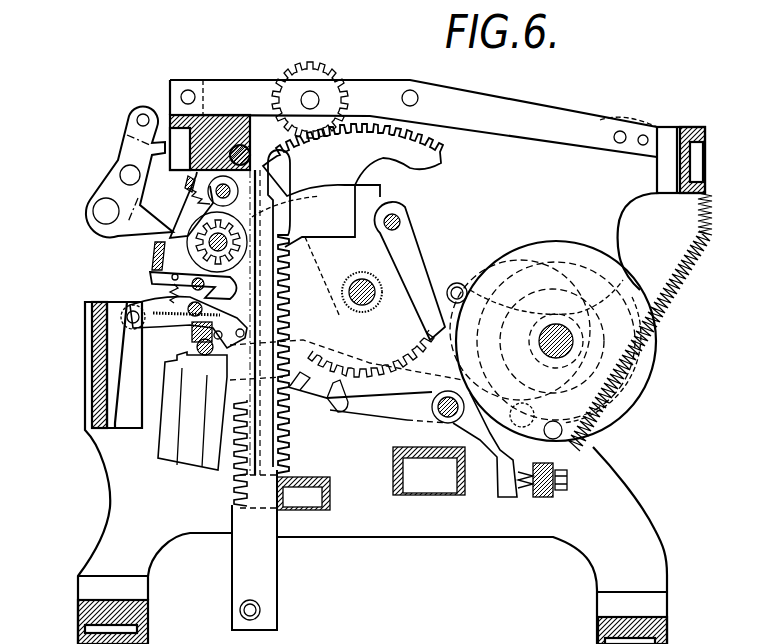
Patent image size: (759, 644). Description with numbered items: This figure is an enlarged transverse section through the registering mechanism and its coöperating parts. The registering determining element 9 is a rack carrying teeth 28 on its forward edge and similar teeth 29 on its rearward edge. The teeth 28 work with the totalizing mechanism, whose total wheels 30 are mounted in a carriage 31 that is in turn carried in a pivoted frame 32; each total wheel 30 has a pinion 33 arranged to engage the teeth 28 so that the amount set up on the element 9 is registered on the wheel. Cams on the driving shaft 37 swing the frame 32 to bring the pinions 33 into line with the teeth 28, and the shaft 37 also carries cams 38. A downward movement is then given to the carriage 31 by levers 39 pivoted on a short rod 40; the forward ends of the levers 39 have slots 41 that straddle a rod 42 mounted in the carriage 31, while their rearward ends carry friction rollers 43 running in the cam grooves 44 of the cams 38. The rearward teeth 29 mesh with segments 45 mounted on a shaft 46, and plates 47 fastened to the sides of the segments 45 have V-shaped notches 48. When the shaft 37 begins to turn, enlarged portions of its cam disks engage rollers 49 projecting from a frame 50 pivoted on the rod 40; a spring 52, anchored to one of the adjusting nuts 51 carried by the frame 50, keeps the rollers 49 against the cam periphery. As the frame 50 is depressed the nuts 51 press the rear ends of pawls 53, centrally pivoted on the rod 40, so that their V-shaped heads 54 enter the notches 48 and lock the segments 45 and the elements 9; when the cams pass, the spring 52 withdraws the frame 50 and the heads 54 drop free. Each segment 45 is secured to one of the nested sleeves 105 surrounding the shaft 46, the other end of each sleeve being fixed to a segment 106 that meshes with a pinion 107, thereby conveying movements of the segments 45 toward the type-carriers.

The registering determining element 9 is at (263, 563).
The teeth 28 is at (240, 443).
The teeth 29 is at (272, 440).
The total wheel 30 is at (173, 227).
The carriage 31 is at (170, 262).
The frame 32 is at (170, 450).
The pinion 33 is at (245, 217).
The driving shaft 37 is at (541, 343).
The cam 38 is at (573, 248).
The lever 39 is at (286, 383).
The short rod 40 is at (443, 420).
The slot 41 is at (217, 335).
The rod 42 is at (205, 348).
The friction roller 43 is at (593, 423).
The cam groove 44 is at (617, 402).
The segment 45 is at (300, 380).
The shaft 46 is at (360, 278).
The plate 47 is at (377, 357).
The V-shaped notch 48 is at (345, 352).
The roller 49 is at (537, 413).
The frame 50 is at (547, 495).
The adjusting nut 51 is at (565, 487).
The spring 52 is at (687, 277).
The pawl 53 is at (507, 487).
The V-shaped head 54 is at (337, 387).
The nested sleeve 105 is at (377, 270).
The segment 106 is at (420, 153).
The pinion 107 is at (320, 62).